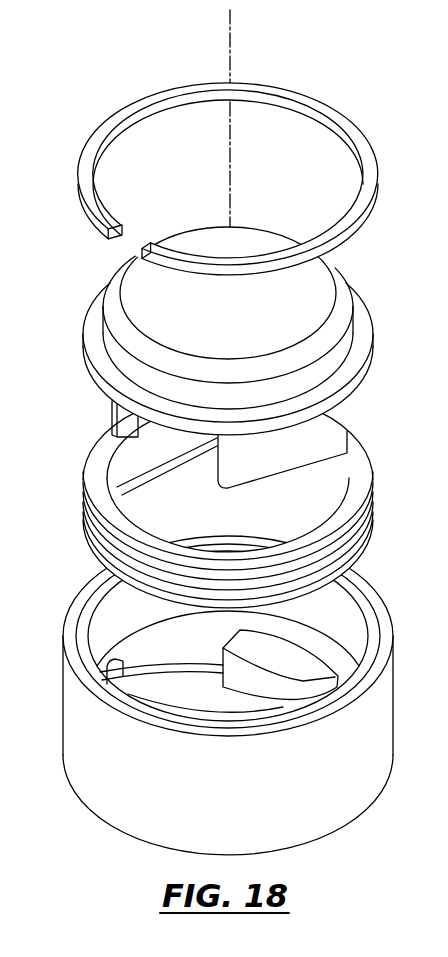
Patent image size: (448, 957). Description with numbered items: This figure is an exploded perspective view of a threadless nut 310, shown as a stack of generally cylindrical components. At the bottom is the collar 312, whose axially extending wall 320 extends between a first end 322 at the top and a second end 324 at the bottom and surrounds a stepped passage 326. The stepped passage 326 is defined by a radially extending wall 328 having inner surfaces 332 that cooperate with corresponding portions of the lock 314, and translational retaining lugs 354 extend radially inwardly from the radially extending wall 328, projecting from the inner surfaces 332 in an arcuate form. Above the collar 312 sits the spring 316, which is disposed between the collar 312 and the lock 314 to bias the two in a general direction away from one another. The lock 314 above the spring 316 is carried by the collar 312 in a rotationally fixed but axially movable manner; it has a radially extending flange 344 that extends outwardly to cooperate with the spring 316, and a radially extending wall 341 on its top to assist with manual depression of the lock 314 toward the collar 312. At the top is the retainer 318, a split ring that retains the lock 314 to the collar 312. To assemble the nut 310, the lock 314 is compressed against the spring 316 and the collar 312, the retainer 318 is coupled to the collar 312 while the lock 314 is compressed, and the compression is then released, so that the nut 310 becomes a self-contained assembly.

The nut 310 is at (128, 68).
The collar 312 is at (398, 588).
The lock 314 is at (359, 288).
The spring 316 is at (379, 441).
The retainer 318 is at (346, 101).
The axially extending wall 320 is at (62, 662).
The first end 322 is at (87, 582).
The second end 324 is at (346, 825).
The stepped passage 326 is at (215, 709).
The radially extending wall 328 is at (118, 664).
The inner surfaces 332 is at (207, 662).
The radially extending wall 341 is at (237, 318).
The radially extending flange 344 is at (375, 331).
The translational retaining lugs 354 is at (240, 708).